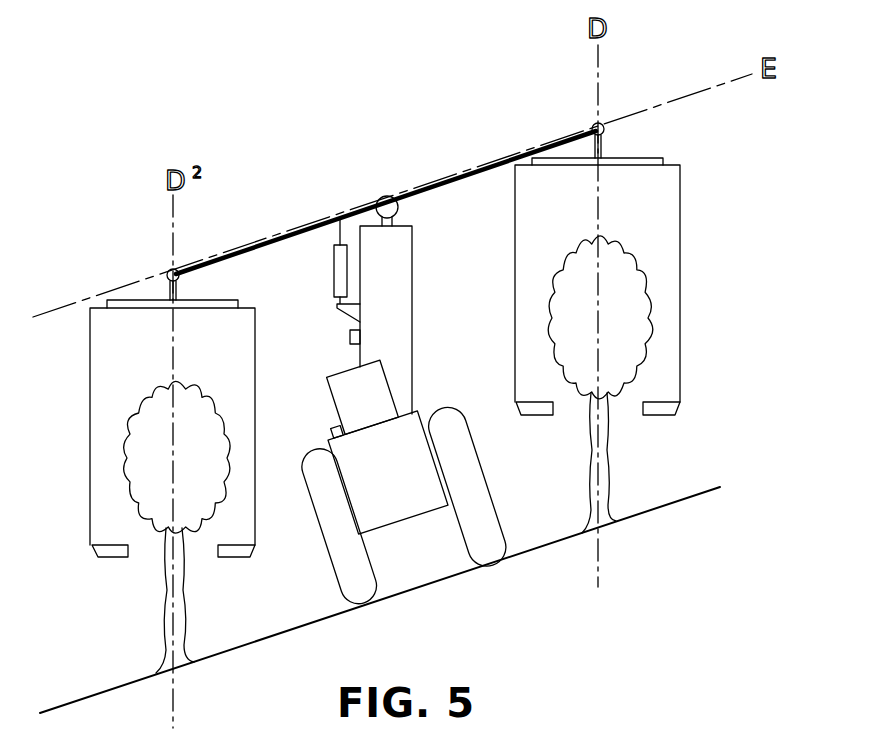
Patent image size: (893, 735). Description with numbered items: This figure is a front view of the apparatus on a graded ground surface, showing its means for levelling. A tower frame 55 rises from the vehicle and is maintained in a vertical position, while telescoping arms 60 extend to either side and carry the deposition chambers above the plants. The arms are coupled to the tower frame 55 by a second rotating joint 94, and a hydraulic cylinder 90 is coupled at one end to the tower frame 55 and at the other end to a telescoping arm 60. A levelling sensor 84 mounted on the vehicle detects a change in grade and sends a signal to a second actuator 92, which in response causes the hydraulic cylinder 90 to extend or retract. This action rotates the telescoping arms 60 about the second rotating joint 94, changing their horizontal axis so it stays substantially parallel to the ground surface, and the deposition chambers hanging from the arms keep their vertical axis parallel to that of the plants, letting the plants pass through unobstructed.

The tower frame 55 is at (412, 276).
The telescoping arms 60 is at (296, 226).
The levelling sensor 84 is at (331, 427).
The hydraulic cylinder 90 is at (338, 272).
The second actuator 92 is at (350, 337).
The second rotating joint 94 is at (384, 195).